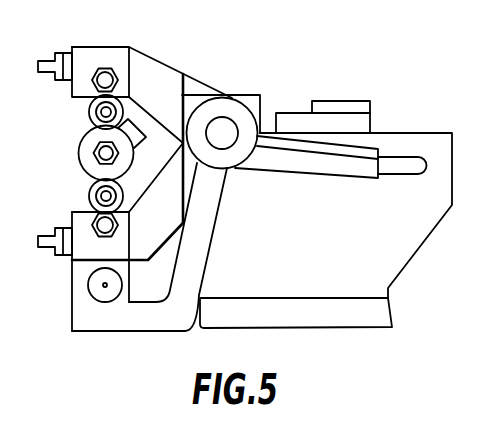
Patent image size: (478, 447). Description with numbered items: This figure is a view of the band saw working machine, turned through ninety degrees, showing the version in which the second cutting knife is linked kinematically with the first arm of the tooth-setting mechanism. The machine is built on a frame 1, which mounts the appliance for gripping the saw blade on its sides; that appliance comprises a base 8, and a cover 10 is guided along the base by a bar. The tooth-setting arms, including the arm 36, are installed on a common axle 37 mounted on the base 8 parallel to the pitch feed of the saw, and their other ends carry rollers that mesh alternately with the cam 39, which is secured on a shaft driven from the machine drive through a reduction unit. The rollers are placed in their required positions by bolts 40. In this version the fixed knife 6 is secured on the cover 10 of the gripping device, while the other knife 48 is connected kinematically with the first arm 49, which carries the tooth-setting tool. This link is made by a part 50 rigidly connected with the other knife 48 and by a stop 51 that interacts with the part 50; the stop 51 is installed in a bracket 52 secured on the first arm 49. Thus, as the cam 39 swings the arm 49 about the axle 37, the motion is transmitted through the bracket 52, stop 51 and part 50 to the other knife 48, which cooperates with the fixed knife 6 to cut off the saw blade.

The frame 1 is at (375, 307).
The fixed knife 6 is at (302, 125).
The base 8 is at (398, 237).
The cover 10 is at (356, 110).
The arm 36 is at (87, 58).
The common axle 37 is at (223, 123).
The cam 39 is at (132, 122).
The bolts 40 is at (48, 64).
The other knife 48 is at (370, 165).
The first arm 49 is at (88, 247).
The part 50 is at (122, 313).
The stop 51 is at (102, 292).
The bracket 52 is at (83, 277).